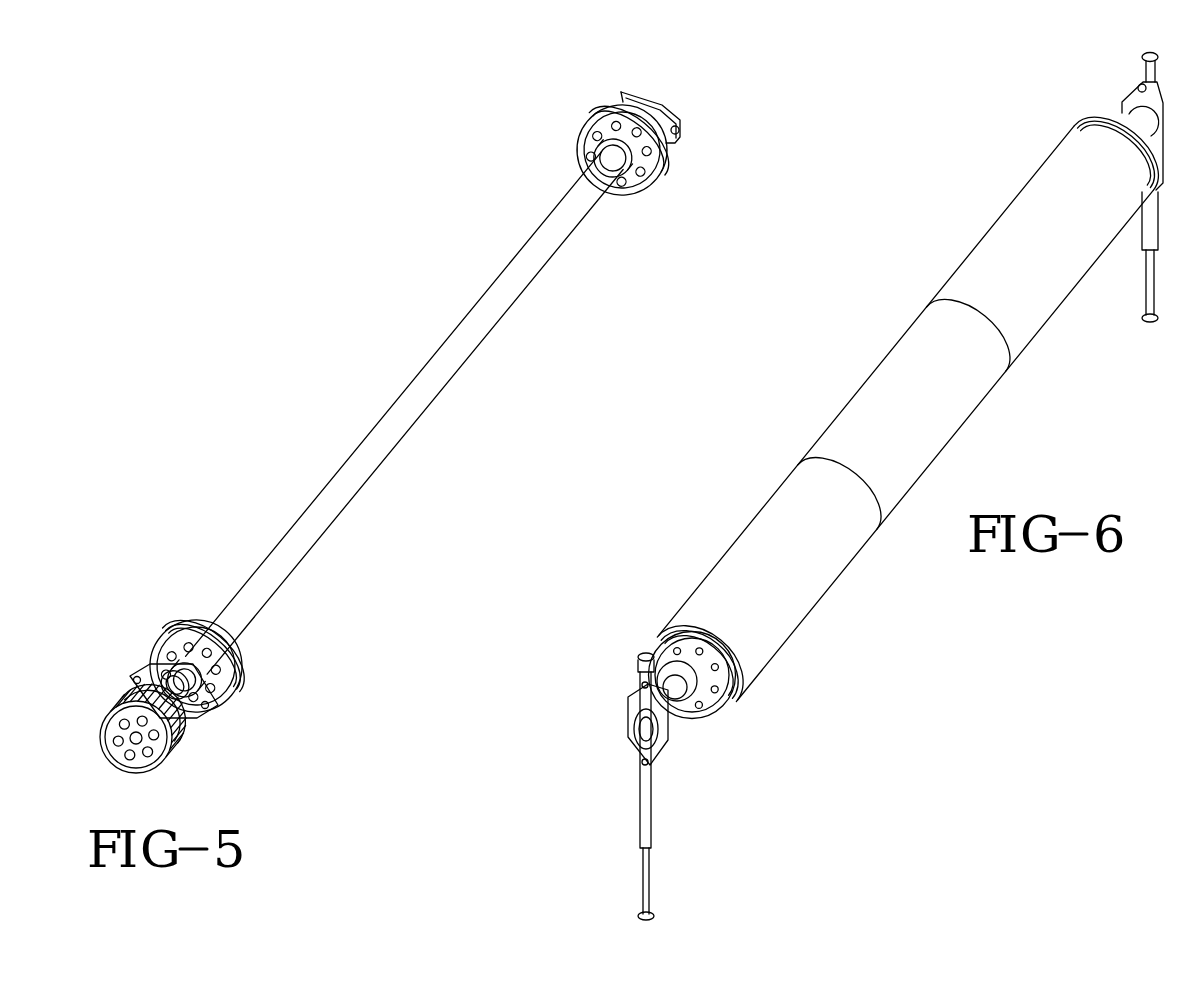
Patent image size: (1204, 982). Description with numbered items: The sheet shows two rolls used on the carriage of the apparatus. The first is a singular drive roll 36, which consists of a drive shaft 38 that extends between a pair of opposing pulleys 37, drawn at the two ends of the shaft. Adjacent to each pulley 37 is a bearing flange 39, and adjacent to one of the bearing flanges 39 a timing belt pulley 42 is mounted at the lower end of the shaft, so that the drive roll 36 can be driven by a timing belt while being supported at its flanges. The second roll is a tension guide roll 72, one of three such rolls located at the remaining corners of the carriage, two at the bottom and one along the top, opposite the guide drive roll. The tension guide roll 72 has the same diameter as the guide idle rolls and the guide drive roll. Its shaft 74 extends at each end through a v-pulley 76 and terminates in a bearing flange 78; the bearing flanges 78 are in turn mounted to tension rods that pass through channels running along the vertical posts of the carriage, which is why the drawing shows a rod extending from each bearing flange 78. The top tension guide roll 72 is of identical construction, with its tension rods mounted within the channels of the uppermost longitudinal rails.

In FIG. 5, the drive roll 36 is at (400, 354).
In FIG. 5, the pulley 37 is at (188, 622).
In FIG. 5, the drive shaft 38 is at (382, 436).
In FIG. 5, the bearing flange 39 is at (143, 673).
In FIG. 5, the timing belt pulley 42 is at (187, 745).
In FIG. 6, the tension guide roll 72 is at (938, 259).
In FIG. 6, the shaft 74 is at (673, 692).
In FIG. 6, the v-pulley 76 is at (720, 693).
In FIG. 6, the bearing flange 78 is at (632, 738).